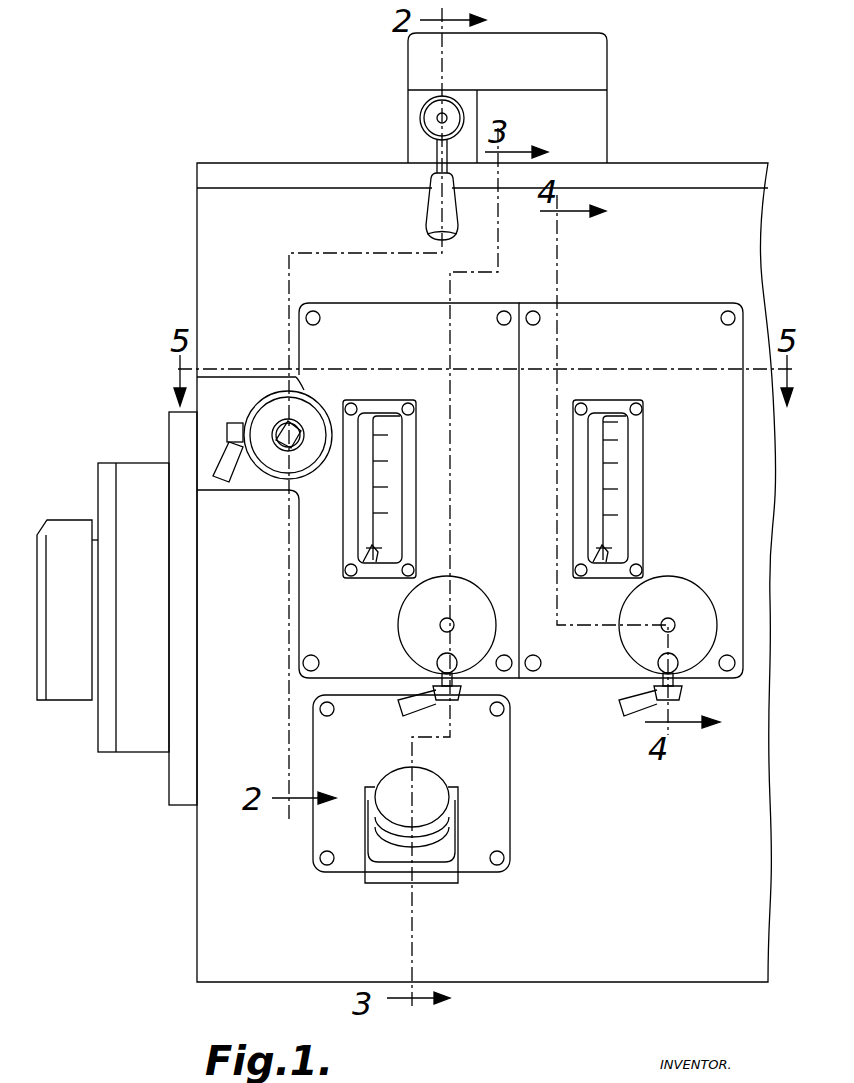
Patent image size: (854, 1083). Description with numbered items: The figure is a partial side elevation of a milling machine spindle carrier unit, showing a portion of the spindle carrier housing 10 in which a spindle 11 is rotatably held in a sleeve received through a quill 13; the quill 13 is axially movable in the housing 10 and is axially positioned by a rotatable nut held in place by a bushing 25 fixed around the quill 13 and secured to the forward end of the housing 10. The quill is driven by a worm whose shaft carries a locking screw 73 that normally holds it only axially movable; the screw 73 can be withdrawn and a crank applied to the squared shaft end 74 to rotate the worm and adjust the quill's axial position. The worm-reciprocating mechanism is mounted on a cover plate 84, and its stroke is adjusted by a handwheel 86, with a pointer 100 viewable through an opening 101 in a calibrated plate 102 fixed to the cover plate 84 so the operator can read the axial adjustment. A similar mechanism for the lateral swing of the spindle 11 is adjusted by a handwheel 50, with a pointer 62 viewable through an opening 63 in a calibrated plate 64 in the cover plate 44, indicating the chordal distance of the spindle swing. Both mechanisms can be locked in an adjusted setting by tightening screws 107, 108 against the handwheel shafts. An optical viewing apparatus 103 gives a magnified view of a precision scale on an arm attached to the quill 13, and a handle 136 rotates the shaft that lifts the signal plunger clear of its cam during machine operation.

The spindle carrier housing 10 is at (197, 197).
The spindle 11 is at (77, 702).
The quill 13 is at (151, 757).
The bushing 25 is at (168, 805).
The handle 136 is at (428, 216).
The cover plate 84 is at (363, 305).
The cover plate 44 is at (619, 305).
The squared shaft end 74 is at (318, 404).
The locking screw 73 is at (236, 422).
The calibrated plate 102 is at (366, 402).
The opening 101 is at (360, 493).
The pointer 100 is at (365, 548).
The calibrated plate 64 is at (590, 402).
The opening 63 is at (590, 432).
The pointer 62 is at (598, 565).
The handwheel 86 is at (456, 578).
The screw 108 is at (461, 692).
The handwheel 50 is at (663, 578).
The screw 107 is at (681, 693).
The optical viewing apparatus 103 is at (441, 784).